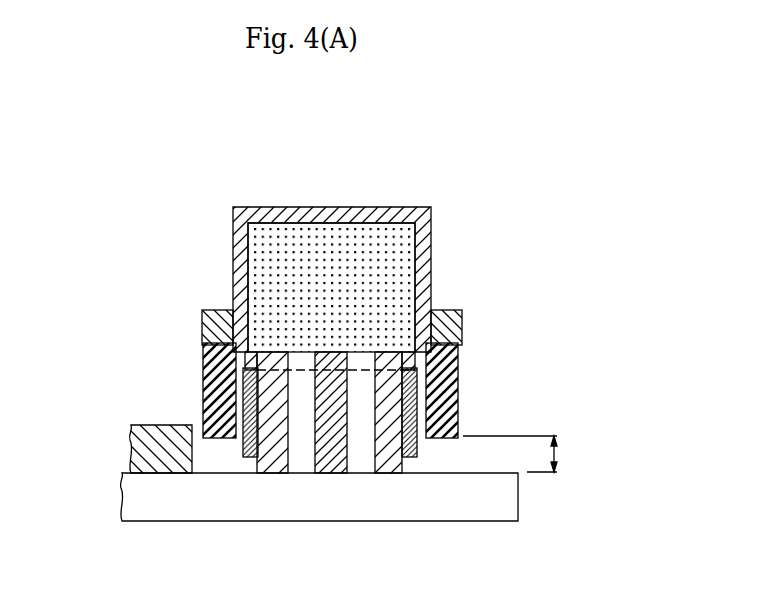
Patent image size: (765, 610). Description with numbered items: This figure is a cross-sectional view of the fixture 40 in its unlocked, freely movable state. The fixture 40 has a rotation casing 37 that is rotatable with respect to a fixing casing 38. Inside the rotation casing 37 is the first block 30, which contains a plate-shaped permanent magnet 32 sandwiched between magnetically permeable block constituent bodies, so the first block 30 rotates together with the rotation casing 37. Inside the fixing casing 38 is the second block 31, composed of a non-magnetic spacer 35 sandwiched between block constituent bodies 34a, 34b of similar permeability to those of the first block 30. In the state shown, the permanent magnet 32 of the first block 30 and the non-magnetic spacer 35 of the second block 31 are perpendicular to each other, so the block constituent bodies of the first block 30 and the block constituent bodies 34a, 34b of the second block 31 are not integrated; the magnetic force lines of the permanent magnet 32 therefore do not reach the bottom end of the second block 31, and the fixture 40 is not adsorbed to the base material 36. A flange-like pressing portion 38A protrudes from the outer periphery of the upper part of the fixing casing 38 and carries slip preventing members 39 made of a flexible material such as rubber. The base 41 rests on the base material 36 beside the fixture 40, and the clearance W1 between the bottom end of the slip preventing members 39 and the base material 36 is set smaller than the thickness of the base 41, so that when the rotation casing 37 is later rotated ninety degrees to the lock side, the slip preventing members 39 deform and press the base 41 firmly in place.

The first block 30 is at (329, 257).
The second block 31 is at (351, 473).
The permanent magnet 32 is at (398, 250).
The block constituent body 34a is at (270, 462).
The block constituent body 34b is at (363, 458).
The non-magnetic spacer 35 is at (322, 463).
The base material 36 is at (196, 513).
The rotation casing 37 is at (233, 235).
The fixing casing 38 is at (460, 310).
The pressing portion 38A is at (204, 341).
The slip preventing members 39 is at (205, 397).
The fixture 40 is at (273, 200).
The base 41 is at (135, 450).
The clearance W1 is at (556, 455).